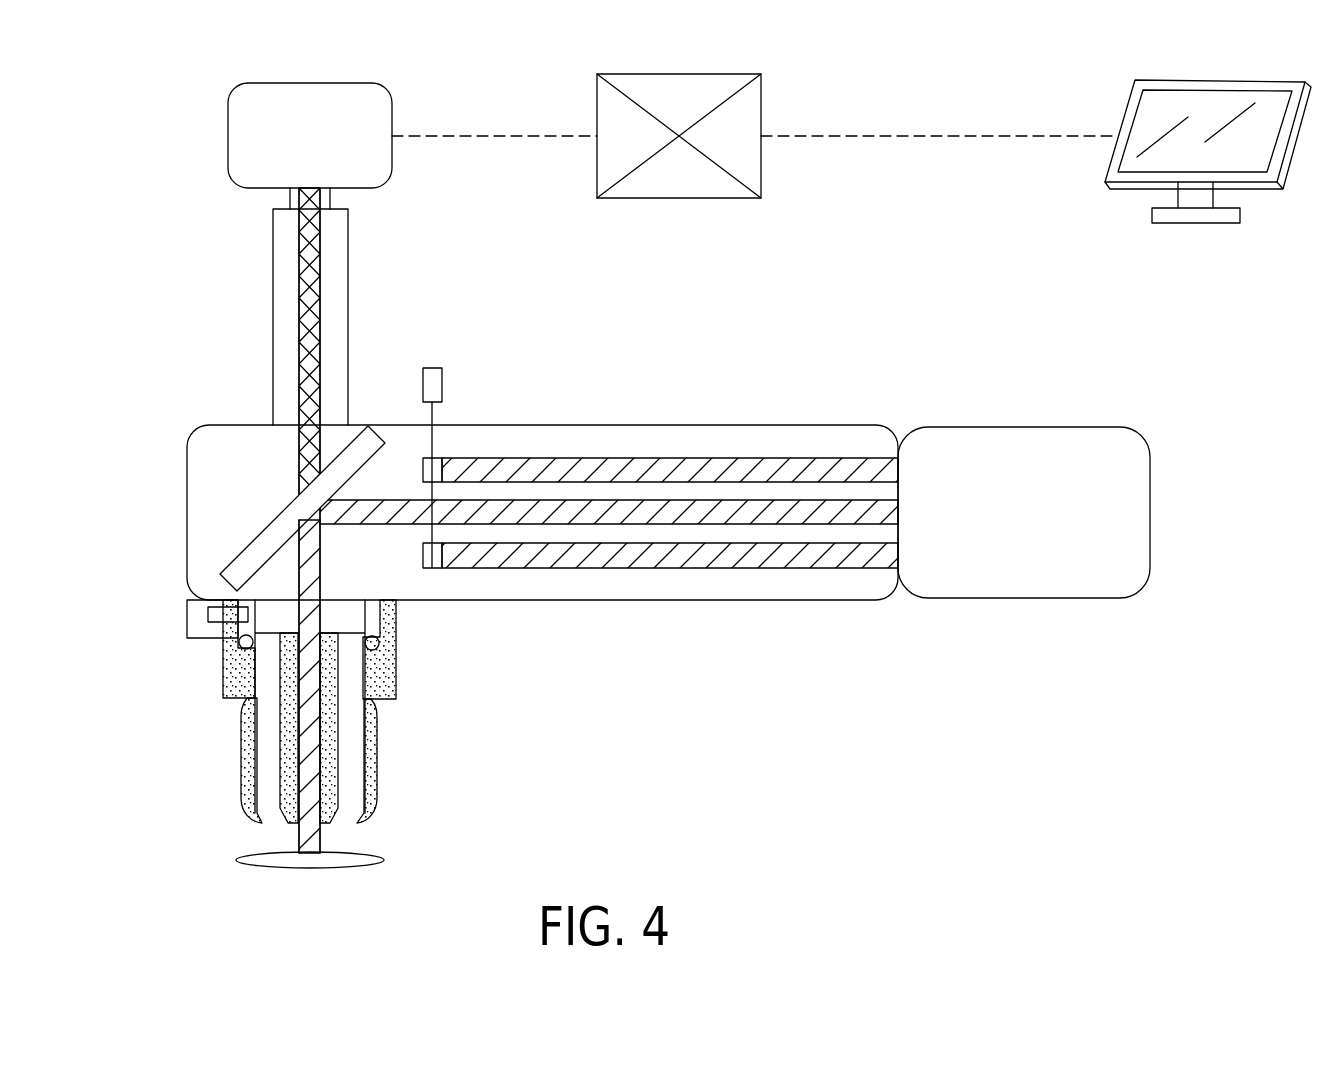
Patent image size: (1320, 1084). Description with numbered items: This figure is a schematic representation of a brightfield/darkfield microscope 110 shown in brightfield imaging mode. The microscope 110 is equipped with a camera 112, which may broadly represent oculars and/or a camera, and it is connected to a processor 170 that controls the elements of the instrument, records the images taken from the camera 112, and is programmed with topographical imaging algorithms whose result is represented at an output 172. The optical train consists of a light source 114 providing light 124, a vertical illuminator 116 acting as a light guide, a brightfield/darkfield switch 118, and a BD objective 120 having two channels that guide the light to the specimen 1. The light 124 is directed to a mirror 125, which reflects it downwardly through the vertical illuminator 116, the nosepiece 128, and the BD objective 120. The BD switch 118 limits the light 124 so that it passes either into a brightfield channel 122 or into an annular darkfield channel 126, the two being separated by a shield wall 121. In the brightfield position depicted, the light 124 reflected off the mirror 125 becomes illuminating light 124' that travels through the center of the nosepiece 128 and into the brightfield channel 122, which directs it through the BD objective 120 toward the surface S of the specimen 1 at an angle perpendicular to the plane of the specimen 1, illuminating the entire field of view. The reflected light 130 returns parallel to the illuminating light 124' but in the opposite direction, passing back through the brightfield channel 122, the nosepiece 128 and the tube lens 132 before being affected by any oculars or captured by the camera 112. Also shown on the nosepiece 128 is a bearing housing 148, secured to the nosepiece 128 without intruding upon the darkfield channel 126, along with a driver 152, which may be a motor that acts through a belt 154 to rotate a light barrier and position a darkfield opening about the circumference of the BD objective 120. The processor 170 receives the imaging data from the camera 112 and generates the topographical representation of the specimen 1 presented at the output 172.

The microscope 110 is at (163, 166).
The camera 112 is at (392, 100).
The light source 114 is at (1040, 430).
The vertical illuminator 116 is at (630, 413).
The brightfield/darkfield switch 118 is at (455, 384).
The BD objective 120 is at (232, 804).
The shield wall 121 is at (330, 747).
The brightfield channel 122 is at (313, 772).
The light 124 is at (609, 475).
The illuminating light 124' is at (224, 686).
The mirror 125 is at (265, 523).
The darkfield channel 126 is at (350, 795).
The nosepiece 128 is at (397, 690).
The reflected light 130 is at (309, 332).
The tube lens 132 is at (273, 230).
The bearing housing 148 is at (240, 640).
The driver 152 is at (197, 613).
The belt 154 is at (233, 613).
The processor 170 is at (758, 96).
The output 172 is at (1205, 82).
The surface S is at (360, 855).
The specimen 1 is at (350, 868).